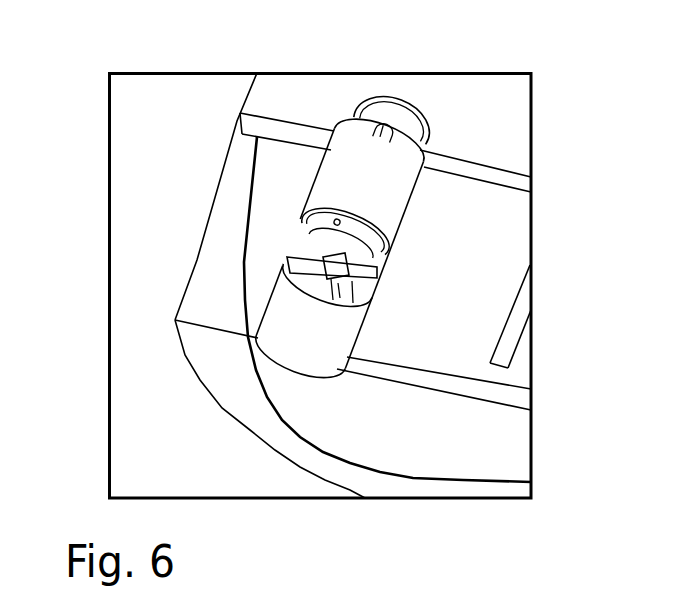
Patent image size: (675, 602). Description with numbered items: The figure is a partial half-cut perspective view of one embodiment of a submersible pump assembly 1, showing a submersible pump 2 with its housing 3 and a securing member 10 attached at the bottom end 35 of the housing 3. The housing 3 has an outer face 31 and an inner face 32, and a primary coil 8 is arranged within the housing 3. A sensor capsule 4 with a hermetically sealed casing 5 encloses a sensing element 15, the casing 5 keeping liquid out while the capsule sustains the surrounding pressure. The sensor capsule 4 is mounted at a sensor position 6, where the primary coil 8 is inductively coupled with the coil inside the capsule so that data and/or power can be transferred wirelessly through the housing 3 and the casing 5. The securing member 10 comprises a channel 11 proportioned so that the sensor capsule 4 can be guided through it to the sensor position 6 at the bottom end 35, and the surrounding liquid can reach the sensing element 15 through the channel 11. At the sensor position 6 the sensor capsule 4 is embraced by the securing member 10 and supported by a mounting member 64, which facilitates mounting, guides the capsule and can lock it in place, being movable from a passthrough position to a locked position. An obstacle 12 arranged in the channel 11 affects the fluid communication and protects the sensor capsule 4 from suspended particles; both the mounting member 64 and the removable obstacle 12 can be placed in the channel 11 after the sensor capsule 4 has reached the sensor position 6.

The submersible pump assembly 1 is at (84, 199).
The submersible pump 2 is at (403, 85).
The housing 3 is at (507, 173).
The sensor capsule 4 is at (461, 233).
The hermetically sealed casing 5 is at (383, 192).
The sensor position 6 is at (437, 220).
The primary coil 8 is at (418, 115).
The securing member 10 is at (460, 437).
The channel 11 is at (322, 353).
The obstacle 12 is at (363, 282).
The sensing element 15 is at (372, 252).
The outer face 31 is at (484, 148).
The inner face 32 is at (487, 196).
The bottom end 35 is at (531, 482).
The mounting member 64 is at (350, 285).